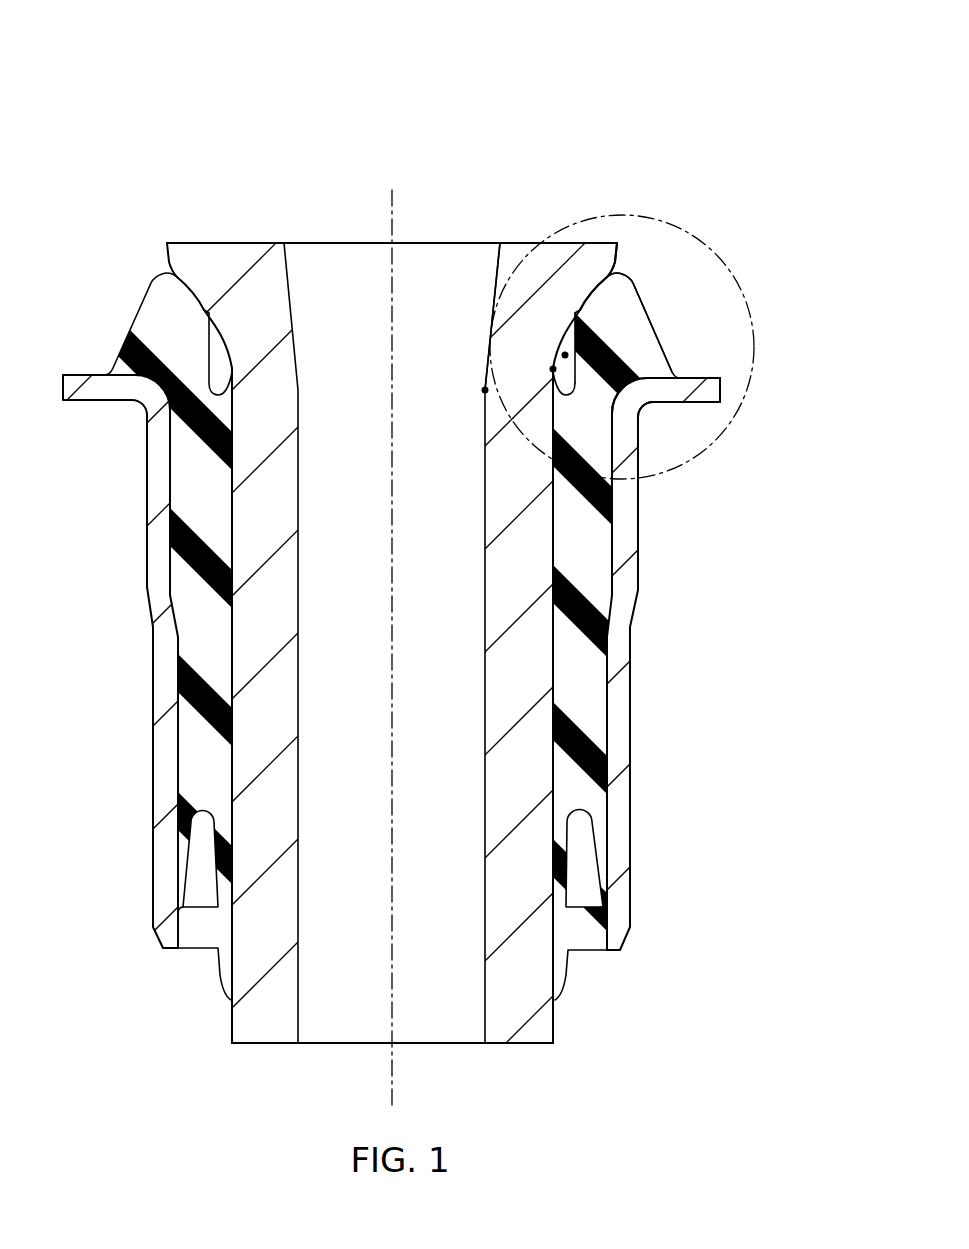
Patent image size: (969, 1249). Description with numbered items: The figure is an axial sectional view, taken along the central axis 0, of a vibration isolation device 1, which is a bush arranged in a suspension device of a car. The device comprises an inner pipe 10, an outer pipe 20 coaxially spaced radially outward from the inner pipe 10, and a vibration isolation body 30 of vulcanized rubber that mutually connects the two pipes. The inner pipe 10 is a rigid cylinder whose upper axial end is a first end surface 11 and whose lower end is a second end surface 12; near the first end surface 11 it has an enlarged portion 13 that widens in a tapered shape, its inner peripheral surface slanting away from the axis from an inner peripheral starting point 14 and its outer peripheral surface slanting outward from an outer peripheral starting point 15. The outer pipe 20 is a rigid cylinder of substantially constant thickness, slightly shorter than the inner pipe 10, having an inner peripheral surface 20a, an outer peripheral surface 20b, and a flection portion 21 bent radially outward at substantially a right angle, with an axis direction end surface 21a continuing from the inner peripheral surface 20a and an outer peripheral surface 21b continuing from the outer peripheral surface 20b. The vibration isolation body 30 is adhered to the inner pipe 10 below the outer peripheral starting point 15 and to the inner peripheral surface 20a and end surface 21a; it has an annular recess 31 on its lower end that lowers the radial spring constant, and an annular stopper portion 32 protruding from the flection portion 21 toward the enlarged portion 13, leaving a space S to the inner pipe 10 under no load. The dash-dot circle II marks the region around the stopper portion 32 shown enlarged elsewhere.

The vibration isolation device 1 is at (711, 96).
The central axis 0 is at (392, 195).
The inner pipe 10 is at (500, 690).
The first end surface 11 is at (531, 243).
The second end surface 12 is at (496, 1044).
The enlarged portion 13 is at (597, 262).
The inner peripheral starting point 14 is at (485, 390).
The outer peripheral starting point 15 is at (554, 370).
The outer pipe 20 is at (617, 697).
The inner peripheral surface 20a is at (612, 555).
The outer peripheral surface 20b is at (638, 555).
The flection portion 21 is at (668, 393).
The axis direction end surface 21a is at (710, 376).
The outer peripheral surface of flection portion 21b is at (703, 404).
The vibration isolation body 30 is at (600, 595).
The annular recess 31 is at (580, 897).
The stopper portion 32 is at (636, 335).
The space S is at (565, 355).
The enlarged view region II is at (706, 244).